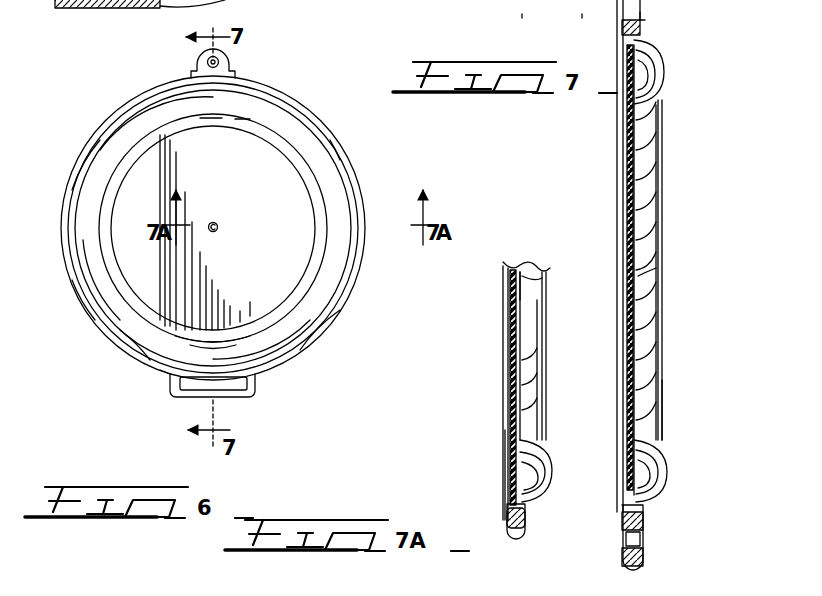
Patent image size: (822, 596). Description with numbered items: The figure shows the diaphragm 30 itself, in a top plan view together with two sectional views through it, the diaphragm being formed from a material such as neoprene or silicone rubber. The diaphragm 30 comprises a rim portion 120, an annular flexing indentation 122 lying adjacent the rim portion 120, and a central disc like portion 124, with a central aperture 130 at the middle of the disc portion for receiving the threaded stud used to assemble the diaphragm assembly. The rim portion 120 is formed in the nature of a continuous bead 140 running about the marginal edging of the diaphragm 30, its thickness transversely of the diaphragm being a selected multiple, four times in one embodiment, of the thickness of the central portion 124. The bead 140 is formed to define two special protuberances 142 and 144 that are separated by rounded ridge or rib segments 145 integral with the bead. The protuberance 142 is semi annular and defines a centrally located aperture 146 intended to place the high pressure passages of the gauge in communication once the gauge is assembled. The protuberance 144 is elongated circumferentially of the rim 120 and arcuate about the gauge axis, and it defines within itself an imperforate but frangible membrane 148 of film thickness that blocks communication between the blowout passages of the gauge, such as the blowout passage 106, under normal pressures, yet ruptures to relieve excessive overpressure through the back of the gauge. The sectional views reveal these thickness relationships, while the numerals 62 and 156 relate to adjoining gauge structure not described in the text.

In FIG. 6, the diaphragm 30 is at (112, 392).
In FIG. 7A, the diaphragm 30 is at (530, 276).
In FIG. 7, the diaphragm 30 is at (680, 401).
In FIG. 6, the housing wall 62 is at (155, 5).
In FIG. 7, the blowout passage 106 is at (580, 9).
In FIG. 6, the rim portion 120 is at (367, 262).
In FIG. 7A, the rim portion 120 is at (510, 522).
In FIG. 7, the rim portion 120 is at (630, 285).
In FIG. 6, the annular flexing indentation 122 is at (330, 207).
In FIG. 7A, the annular flexing indentation 122 is at (525, 452).
In FIG. 7, the annular flexing indentation 122 is at (662, 76).
In FIG. 6, the central disc like portion 124 is at (285, 183).
In FIG. 7A, the central disc like portion 124 is at (520, 362).
In FIG. 7, the central disc like portion 124 is at (642, 333).
In FIG. 6, the central aperture 130 is at (218, 227).
In FIG. 7A, the central aperture 130 is at (506, 264).
In FIG. 7, the central aperture 130 is at (642, 277).
In FIG. 6, the continuous bead 140 is at (310, 340).
In FIG. 7A, the continuous bead 140 is at (518, 528).
In FIG. 6, the protuberance 142 is at (243, 60).
In FIG. 7, the protuberance 142 is at (652, 4).
In FIG. 6, the protuberance 144 is at (165, 402).
In FIG. 7, the protuberance 144 is at (655, 552).
In FIG. 6, the rounded ridge or rib segments 145 is at (78, 165).
In FIG. 7A, the rounded ridge or rib segments 145 is at (505, 522).
In FIG. 6, the centrally located aperture 146 is at (206, 62).
In FIG. 7, the centrally located aperture 146 is at (650, 10).
In FIG. 6, the frangible membrane 148 is at (225, 384).
In FIG. 7, the frangible membrane 148 is at (650, 540).
In FIG. 7, the bracket 156 is at (520, 9).